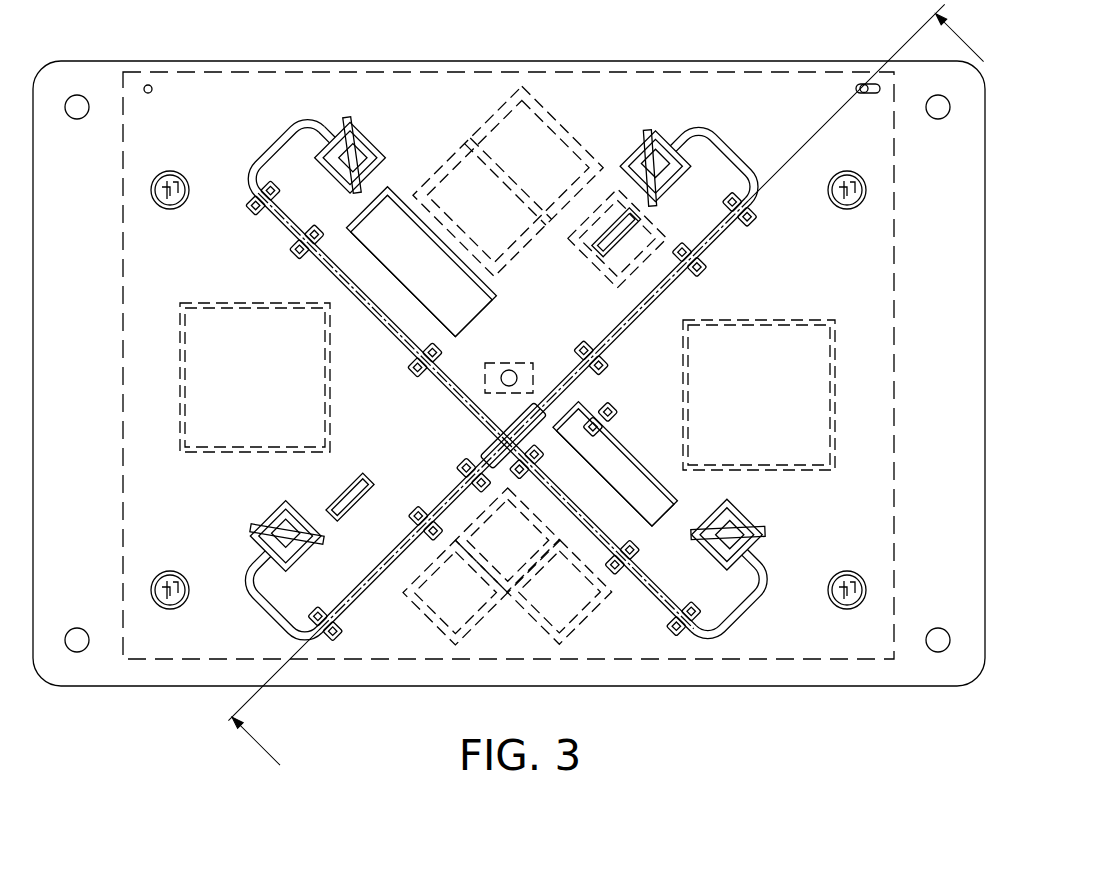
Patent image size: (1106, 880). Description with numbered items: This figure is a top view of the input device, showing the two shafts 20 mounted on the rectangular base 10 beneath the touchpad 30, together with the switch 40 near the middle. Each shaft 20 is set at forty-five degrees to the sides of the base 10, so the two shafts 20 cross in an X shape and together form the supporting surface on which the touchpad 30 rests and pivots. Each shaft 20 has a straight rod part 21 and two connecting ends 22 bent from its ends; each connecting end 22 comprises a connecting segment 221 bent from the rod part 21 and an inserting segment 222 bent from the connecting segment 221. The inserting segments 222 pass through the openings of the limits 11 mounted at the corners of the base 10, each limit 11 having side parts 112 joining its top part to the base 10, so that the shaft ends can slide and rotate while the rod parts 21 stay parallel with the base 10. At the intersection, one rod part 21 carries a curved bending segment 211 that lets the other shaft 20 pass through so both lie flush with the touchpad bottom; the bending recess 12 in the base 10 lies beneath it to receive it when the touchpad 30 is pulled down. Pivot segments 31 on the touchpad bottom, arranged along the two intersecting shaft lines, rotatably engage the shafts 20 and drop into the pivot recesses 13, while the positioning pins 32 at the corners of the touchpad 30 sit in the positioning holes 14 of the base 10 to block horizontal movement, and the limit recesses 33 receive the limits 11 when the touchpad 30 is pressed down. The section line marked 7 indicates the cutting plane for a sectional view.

The base 10 is at (997, 270).
The touchpad 30 is at (908, 190).
The shafts 20 is at (288, 252).
The rod part 21 is at (393, 347).
The bending segment 211 is at (492, 455).
The connecting ends 22 is at (296, 134).
The connecting segment 221 is at (265, 152).
The inserting segment 222 is at (326, 124).
The limits 11 is at (788, 523).
The side parts 112 is at (765, 530).
The bending recess 12 is at (583, 410).
The pivot recesses 13 is at (338, 636).
The positioning holes 14 is at (158, 605).
The pivot segments 31 is at (760, 222).
The positioning pins 32 is at (118, 625).
The limit recesses 33 is at (760, 603).
The switch 40 is at (512, 368).
The section line 7- 7 is at (615, 395).